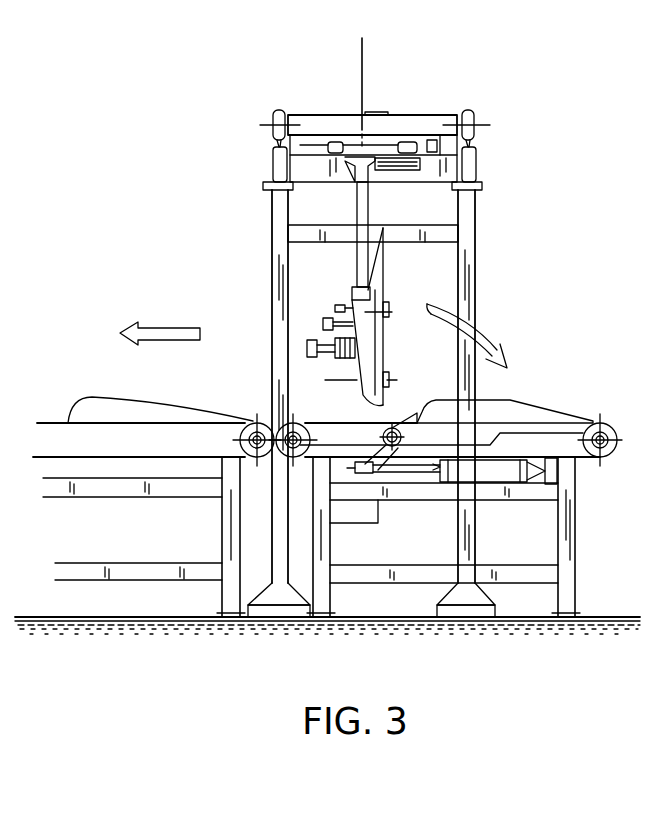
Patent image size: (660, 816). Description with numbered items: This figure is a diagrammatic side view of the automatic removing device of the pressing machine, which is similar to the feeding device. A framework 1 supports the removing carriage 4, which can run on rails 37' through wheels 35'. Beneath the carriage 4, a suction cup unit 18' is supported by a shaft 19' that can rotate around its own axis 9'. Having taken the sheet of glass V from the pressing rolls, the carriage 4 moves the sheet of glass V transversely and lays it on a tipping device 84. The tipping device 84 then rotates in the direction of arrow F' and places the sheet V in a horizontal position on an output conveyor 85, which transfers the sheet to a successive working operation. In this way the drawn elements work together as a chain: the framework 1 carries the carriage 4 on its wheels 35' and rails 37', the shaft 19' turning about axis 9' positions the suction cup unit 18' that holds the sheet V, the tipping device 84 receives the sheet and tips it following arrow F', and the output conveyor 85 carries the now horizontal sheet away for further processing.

The framework 1 is at (465, 233).
The removing carriage 4 is at (405, 118).
The axis 9' is at (340, 92).
The suction cup unit 18' is at (349, 317).
The shaft 19' is at (382, 241).
The wheels 35' is at (407, 113).
The rails 37' is at (400, 164).
The tipping device 84 is at (468, 435).
The output conveyor 85 is at (577, 535).
The sheet of glass V is at (103, 410).
The arrow F' is at (469, 336).